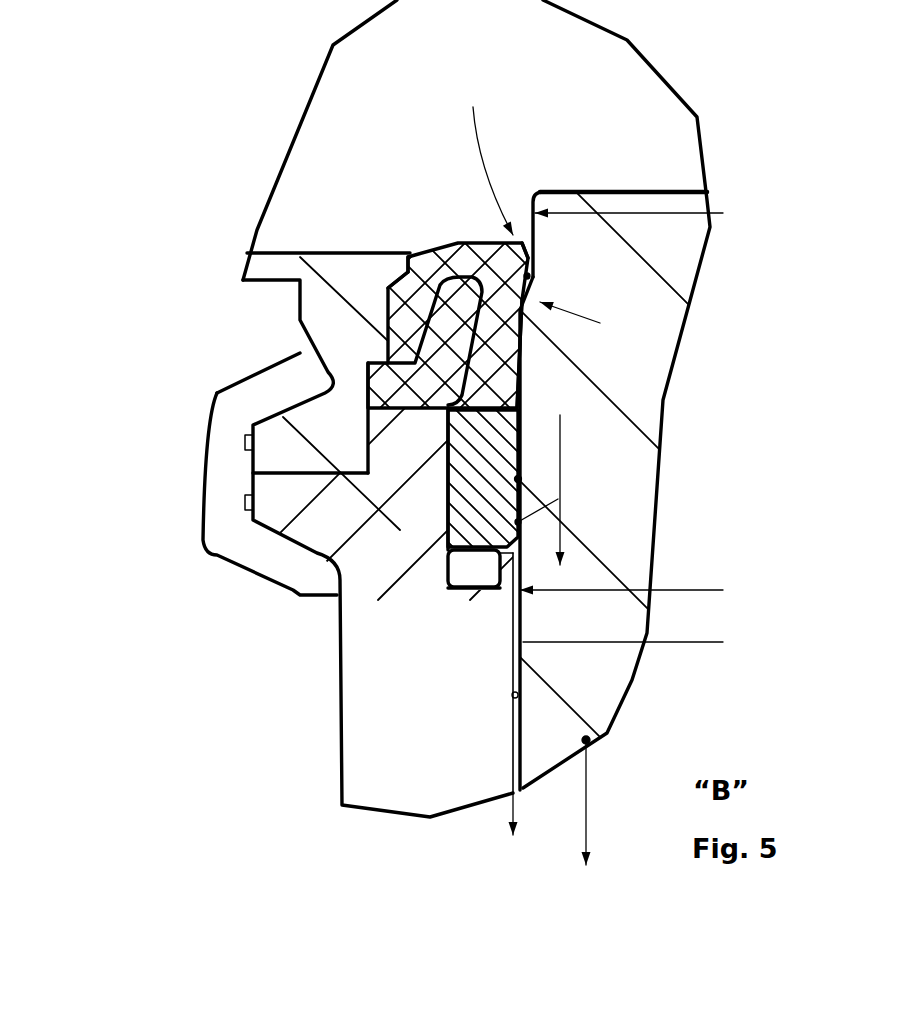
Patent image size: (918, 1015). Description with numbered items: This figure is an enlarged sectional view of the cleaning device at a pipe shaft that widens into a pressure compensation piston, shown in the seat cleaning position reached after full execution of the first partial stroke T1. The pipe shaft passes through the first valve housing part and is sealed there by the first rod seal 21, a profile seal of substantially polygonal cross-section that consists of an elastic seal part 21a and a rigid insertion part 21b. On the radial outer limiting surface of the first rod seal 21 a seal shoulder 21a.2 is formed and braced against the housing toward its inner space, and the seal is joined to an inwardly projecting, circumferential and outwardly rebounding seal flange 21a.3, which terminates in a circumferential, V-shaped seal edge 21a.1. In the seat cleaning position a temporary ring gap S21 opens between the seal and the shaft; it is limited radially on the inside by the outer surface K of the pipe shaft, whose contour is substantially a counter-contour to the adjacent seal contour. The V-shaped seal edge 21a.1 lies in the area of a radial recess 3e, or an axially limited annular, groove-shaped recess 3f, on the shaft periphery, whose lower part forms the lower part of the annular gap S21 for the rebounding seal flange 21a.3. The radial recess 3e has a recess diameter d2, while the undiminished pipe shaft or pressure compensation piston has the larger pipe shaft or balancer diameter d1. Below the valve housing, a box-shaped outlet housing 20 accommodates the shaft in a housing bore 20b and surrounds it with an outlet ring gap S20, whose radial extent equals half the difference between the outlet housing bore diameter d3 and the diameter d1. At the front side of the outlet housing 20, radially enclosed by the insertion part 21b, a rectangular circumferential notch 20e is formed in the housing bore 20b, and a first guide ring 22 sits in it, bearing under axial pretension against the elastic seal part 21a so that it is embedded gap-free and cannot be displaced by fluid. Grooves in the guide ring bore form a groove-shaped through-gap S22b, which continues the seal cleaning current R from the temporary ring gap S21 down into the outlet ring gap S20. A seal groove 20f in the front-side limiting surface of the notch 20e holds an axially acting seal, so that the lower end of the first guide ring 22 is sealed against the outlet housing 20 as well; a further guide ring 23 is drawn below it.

The radial recess 3e is at (465, 437).
The annular groove-shaped recess 3f is at (533, 232).
The outlet housing 20 is at (488, 510).
The housing bore 20b is at (516, 769).
The notch 20e is at (445, 483).
The seal groove 20f is at (445, 740).
The first rod seal 21 is at (437, 318).
The elastic seal part 21a is at (488, 353).
The V-shaped seal edge 21a.1 is at (523, 242).
The seal shoulder 21a.2 is at (403, 282).
The seal flange 21a.3 is at (505, 384).
The insertion part 21b is at (447, 303).
The first guide ring 22 is at (478, 443).
The guide ring 23 is at (468, 572).
The pipe shaft diameter d1 is at (647, 575).
The recess diameter d2 is at (654, 199).
The outlet housing bore diameter d3 is at (648, 623).
The outlet ring gap S20 is at (518, 695).
The temporary ring gap S21 is at (530, 275).
The groove-shaped through-gap S22b is at (518, 479).
The seal cleaning current R is at (530, 490).
The first partial stroke T1 is at (615, 805).
The outer surface of the pipe shaft K is at (571, 303).